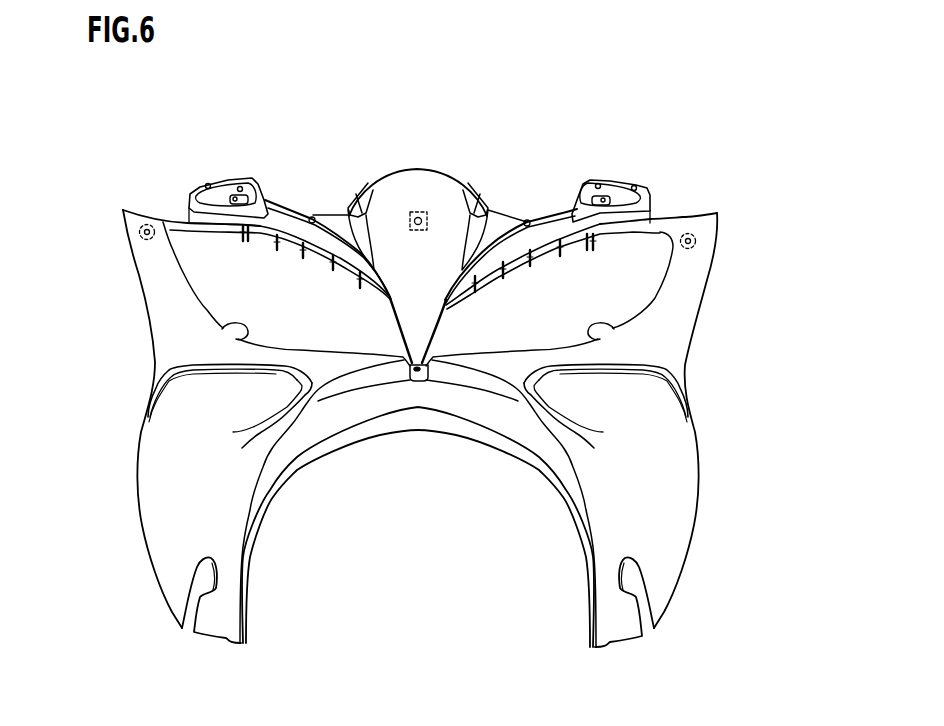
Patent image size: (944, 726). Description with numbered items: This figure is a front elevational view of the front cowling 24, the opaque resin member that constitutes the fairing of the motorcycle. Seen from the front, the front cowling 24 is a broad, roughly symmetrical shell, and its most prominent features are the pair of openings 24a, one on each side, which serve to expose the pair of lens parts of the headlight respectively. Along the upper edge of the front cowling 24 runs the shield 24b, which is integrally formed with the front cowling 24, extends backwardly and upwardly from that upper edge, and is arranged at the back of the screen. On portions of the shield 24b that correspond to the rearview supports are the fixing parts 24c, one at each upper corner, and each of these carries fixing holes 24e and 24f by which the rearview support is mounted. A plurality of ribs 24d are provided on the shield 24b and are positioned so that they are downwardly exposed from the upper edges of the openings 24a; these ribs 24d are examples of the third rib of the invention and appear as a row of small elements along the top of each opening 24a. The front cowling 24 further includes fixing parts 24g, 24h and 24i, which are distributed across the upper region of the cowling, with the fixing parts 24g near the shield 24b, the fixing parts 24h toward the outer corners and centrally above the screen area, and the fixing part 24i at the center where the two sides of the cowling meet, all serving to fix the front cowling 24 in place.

The front cowling 24 is at (677, 306).
The openings 24a is at (228, 325).
The shield 24b is at (545, 225).
The fixing parts 24c is at (192, 190).
The ribs 24d is at (243, 241).
The fixing hole 24e is at (240, 186).
The fixing hole 24f is at (208, 184).
The fixing part 24g is at (313, 217).
The fixing part 24h is at (140, 238).
The fixing part 24i is at (415, 383).